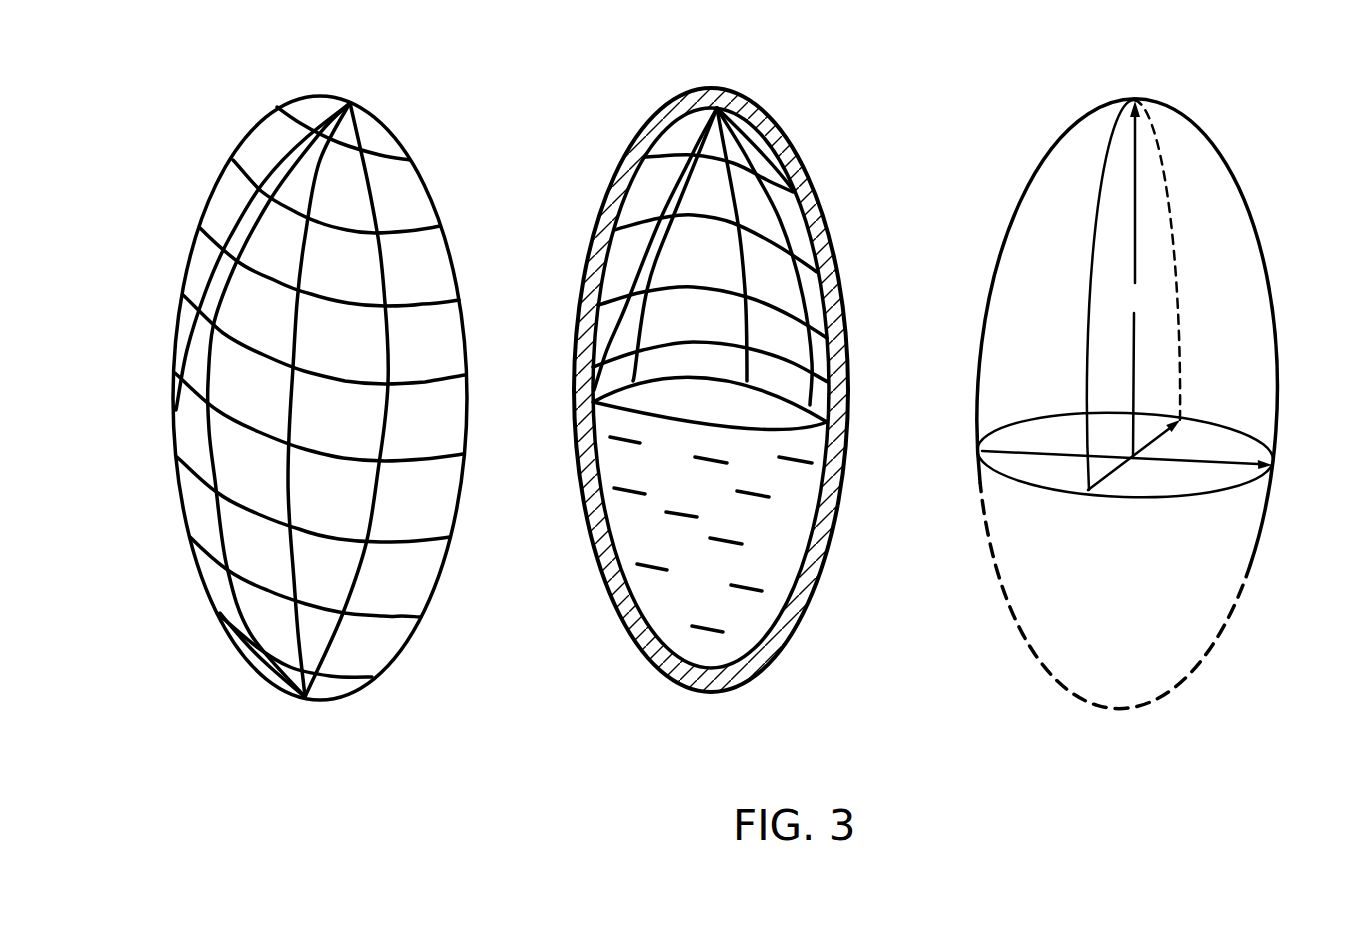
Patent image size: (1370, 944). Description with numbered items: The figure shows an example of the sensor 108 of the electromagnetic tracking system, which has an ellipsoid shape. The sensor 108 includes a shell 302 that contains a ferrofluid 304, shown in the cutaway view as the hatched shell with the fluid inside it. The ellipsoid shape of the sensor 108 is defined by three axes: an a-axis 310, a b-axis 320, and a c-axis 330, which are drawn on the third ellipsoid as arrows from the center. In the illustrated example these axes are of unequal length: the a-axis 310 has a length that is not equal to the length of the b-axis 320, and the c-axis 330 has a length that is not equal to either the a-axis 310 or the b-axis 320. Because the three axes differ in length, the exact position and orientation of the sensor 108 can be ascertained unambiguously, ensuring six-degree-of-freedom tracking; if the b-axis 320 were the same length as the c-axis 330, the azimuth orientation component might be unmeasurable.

The sensor 108 is at (206, 207).
The shell 302 is at (603, 200).
The ferrofluid 304 is at (663, 600).
The a-axis 310 is at (1216, 465).
The b-axis 320 is at (1158, 441).
The c-axis 330 is at (1133, 337).